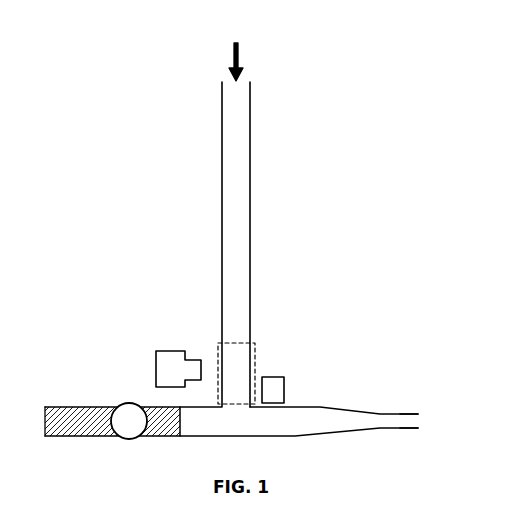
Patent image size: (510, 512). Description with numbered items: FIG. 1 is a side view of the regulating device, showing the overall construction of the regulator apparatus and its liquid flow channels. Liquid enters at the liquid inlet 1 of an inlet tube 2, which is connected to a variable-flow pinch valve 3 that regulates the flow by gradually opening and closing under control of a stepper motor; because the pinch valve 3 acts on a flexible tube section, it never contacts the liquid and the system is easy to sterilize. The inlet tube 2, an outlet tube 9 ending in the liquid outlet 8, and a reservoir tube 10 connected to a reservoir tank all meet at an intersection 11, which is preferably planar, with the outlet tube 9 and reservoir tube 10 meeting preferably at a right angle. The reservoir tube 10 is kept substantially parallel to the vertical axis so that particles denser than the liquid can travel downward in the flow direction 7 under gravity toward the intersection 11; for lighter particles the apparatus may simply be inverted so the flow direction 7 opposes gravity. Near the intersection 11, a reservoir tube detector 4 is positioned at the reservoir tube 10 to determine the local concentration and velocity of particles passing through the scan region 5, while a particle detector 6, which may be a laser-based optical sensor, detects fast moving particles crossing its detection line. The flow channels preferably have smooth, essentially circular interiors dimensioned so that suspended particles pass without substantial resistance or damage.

The liquid inlet 1 is at (38, 416).
The inlet tube 2 is at (55, 403).
The variable-flow pinch valve 3 is at (120, 398).
The reservoir tube detector 4 is at (156, 347).
The scan region 5 is at (211, 339).
The particle detector 6 is at (283, 369).
The flow direction 7 is at (226, 44).
The liquid outlet 8 is at (422, 412).
The outlet tube 9 is at (323, 397).
The reservoir tube 10 is at (215, 152).
The intersection 11 is at (251, 425).